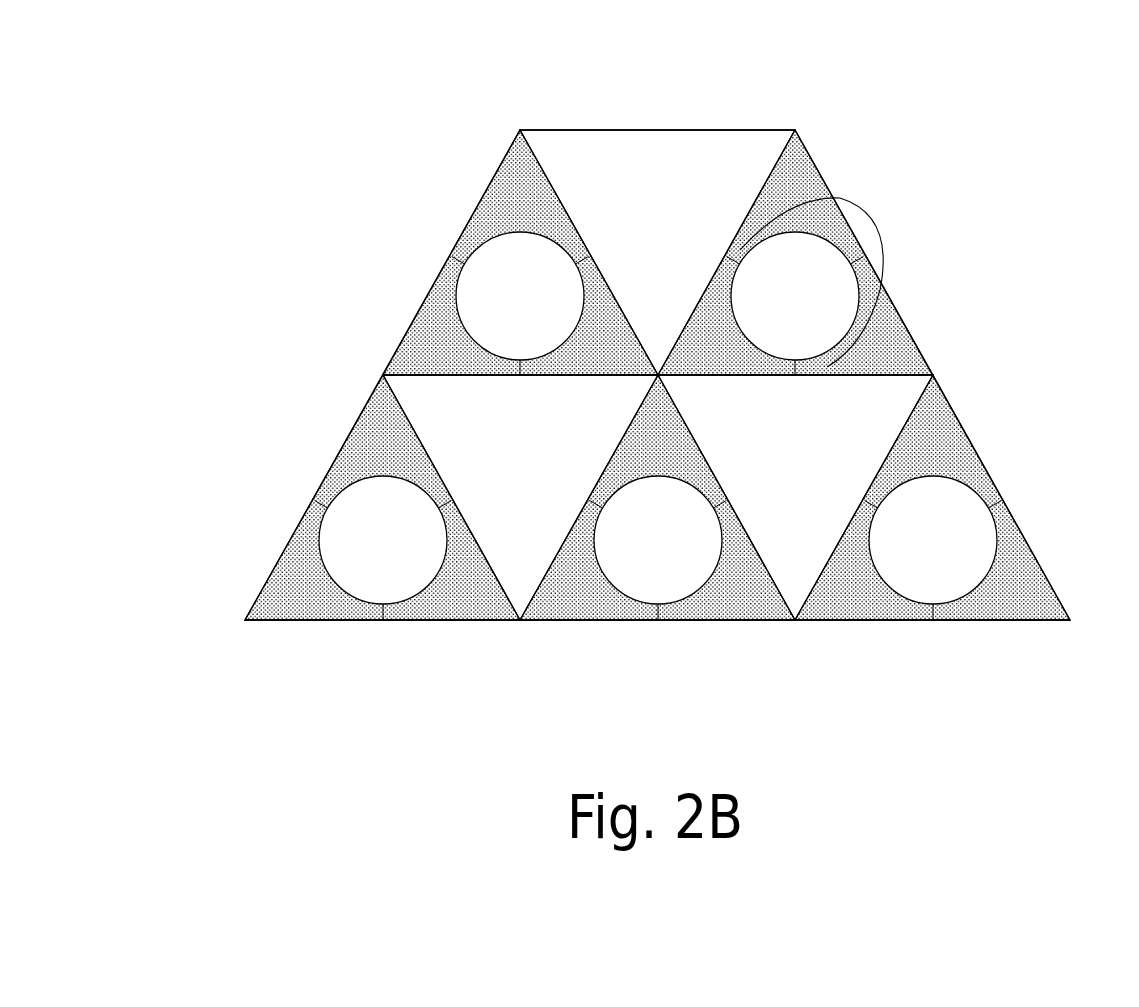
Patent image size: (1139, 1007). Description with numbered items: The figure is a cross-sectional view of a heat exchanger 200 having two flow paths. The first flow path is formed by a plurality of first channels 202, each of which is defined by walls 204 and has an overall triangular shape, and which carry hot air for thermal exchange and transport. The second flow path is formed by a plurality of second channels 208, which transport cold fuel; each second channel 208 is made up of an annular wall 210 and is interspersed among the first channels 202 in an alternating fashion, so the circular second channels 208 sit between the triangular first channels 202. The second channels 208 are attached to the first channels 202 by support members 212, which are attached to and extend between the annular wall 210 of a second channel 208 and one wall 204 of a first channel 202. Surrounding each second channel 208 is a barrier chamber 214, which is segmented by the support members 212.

The heat exchanger 200 is at (980, 132).
The first channel 202 is at (633, 175).
The wall 204 is at (440, 370).
The second channel 208 is at (497, 308).
The annular wall 210 is at (868, 612).
The support member 212 is at (840, 198).
The barrier chamber 214 is at (360, 438).